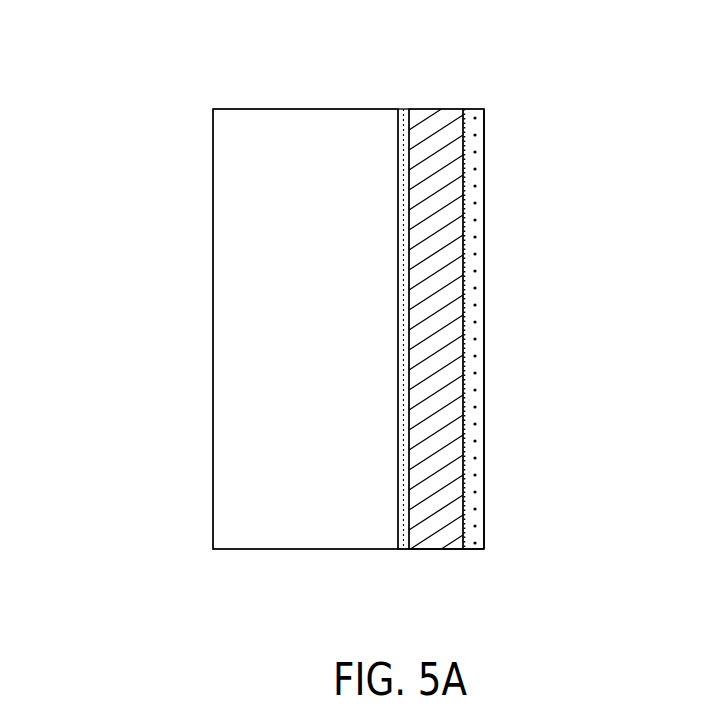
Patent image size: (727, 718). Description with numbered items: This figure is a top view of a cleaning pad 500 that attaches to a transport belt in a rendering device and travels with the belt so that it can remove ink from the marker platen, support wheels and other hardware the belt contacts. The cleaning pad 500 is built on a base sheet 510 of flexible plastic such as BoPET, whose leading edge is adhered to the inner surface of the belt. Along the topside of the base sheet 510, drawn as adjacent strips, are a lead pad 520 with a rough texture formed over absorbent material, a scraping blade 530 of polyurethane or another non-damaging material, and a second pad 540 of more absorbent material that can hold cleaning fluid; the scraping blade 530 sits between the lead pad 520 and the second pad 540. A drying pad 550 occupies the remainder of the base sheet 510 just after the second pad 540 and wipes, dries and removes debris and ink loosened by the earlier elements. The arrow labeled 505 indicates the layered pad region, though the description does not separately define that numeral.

The cleaning pad 500 is at (155, 105).
The layer stack 505 is at (495, 557).
The base sheet 510 is at (485, 116).
The lead pad 520 is at (468, 110).
The scraping blade 530 is at (445, 112).
The second pad 540 is at (400, 112).
The drying pad 550 is at (248, 128).